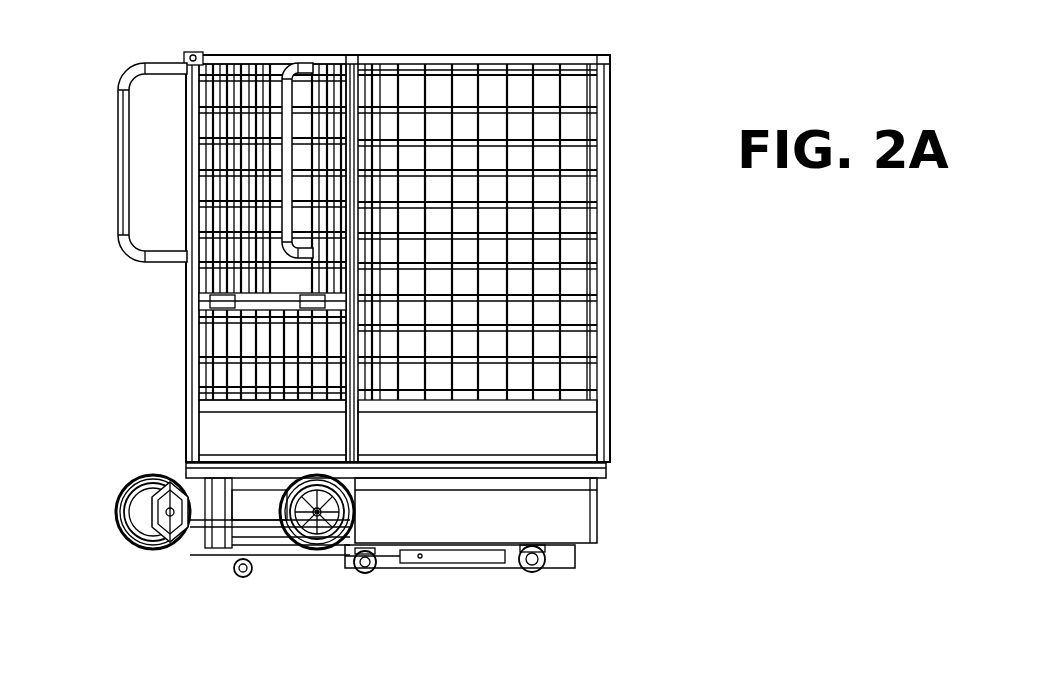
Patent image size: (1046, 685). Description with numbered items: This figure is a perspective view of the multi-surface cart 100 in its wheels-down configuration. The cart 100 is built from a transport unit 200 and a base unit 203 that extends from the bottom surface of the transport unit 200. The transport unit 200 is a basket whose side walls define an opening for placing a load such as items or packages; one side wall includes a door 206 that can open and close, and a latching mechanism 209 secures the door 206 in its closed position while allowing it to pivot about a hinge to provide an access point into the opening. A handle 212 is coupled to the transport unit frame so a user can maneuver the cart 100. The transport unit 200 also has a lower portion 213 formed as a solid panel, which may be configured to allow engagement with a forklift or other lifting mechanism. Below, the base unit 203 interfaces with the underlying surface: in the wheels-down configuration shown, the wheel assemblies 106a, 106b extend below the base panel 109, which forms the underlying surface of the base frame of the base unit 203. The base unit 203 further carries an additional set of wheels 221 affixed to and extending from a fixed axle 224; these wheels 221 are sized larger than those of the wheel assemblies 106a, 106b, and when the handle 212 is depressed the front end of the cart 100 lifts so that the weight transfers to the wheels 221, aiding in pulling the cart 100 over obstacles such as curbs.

The cart 100 is at (706, 396).
The transport unit 200 is at (612, 55).
The base unit 203 is at (612, 466).
The door 206 is at (253, 64).
The latching mechanism 209 is at (197, 55).
The handle 212 is at (118, 185).
The lower portion 213 is at (205, 440).
The wheels 221 is at (128, 497).
The fixed axle 224 is at (173, 537).
The wheel assembly 106a is at (535, 570).
The wheel assembly 106b is at (255, 560).
The base panel 109 is at (447, 587).